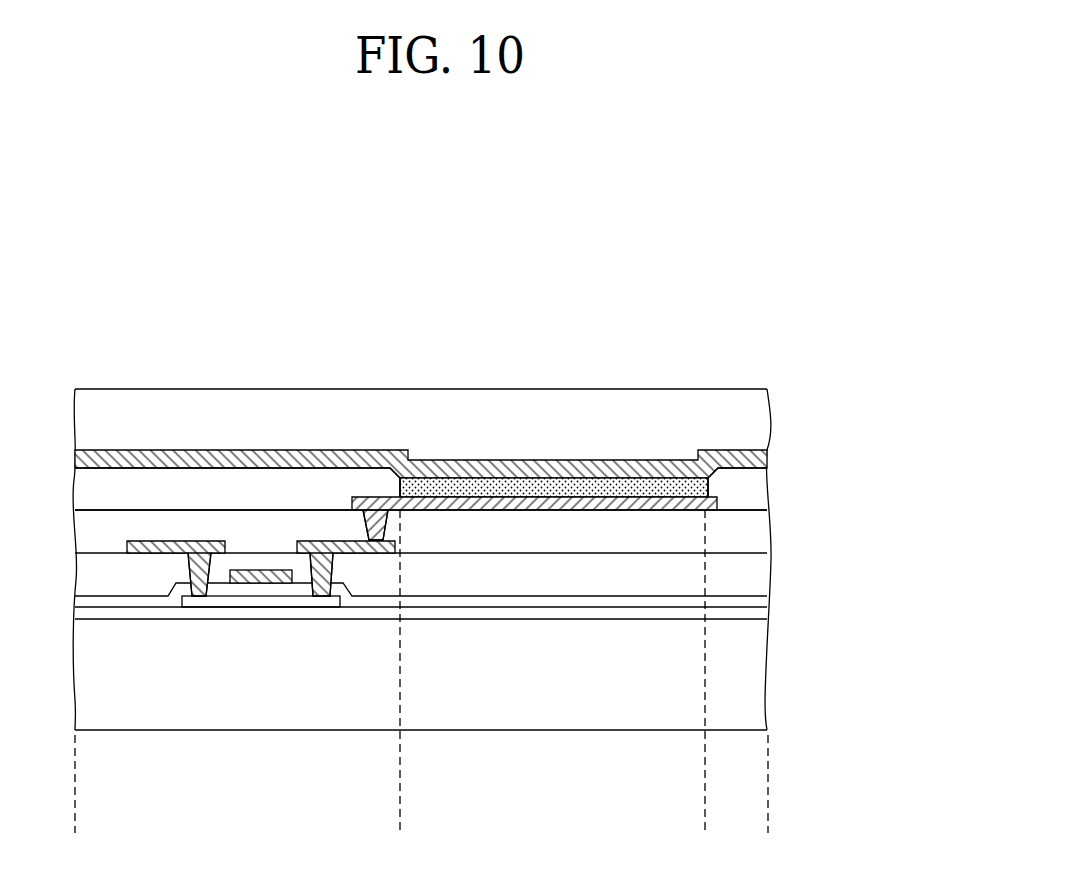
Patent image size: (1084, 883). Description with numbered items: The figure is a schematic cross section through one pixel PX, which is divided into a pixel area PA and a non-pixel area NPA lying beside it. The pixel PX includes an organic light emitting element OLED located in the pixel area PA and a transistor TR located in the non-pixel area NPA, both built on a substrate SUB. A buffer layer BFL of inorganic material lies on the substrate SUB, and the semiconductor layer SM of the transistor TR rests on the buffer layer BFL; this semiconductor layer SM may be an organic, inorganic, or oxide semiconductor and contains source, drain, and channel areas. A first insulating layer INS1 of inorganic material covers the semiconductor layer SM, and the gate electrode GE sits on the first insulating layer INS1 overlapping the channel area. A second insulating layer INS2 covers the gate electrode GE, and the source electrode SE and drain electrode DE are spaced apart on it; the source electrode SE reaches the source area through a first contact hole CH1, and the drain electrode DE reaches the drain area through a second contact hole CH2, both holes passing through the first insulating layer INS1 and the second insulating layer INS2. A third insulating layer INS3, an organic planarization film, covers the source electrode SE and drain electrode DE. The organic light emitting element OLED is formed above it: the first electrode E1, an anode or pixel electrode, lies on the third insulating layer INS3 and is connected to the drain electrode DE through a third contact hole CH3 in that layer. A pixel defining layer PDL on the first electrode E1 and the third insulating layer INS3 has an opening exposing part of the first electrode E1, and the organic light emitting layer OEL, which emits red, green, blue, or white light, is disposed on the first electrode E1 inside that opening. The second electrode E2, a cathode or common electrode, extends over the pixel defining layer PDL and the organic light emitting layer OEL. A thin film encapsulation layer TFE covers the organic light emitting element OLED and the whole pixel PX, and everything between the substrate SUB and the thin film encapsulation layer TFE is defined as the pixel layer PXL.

The pixel PX is at (500, 498).
The thin film encapsulation layer TFE is at (760, 422).
The organic light emitting element OLED is at (421, 409).
The first electrode E1 is at (466, 505).
The organic light emitting layer OEL is at (511, 488).
The second electrode E2 is at (563, 470).
The pixel defining layer PDL is at (755, 492).
The third insulating layer INS3 is at (755, 532).
The second insulating layer INS2 is at (755, 577).
The first insulating layer INS1 is at (755, 603).
The buffer layer BFL is at (755, 612).
The substrate SUB is at (755, 672).
The pixel layer PXL is at (501, 572).
The first contact hole CH1 is at (191, 566).
The second contact hole CH2 is at (314, 566).
The third contact hole CH3 is at (373, 523).
The transistor TR is at (261, 679).
The source electrode SE is at (141, 553).
The gate electrode GE is at (245, 583).
The semiconductor layer SM is at (294, 602).
The drain electrode DE is at (348, 553).
The pixel area PA is at (705, 827).
The non-pixel area NPA is at (400, 827).